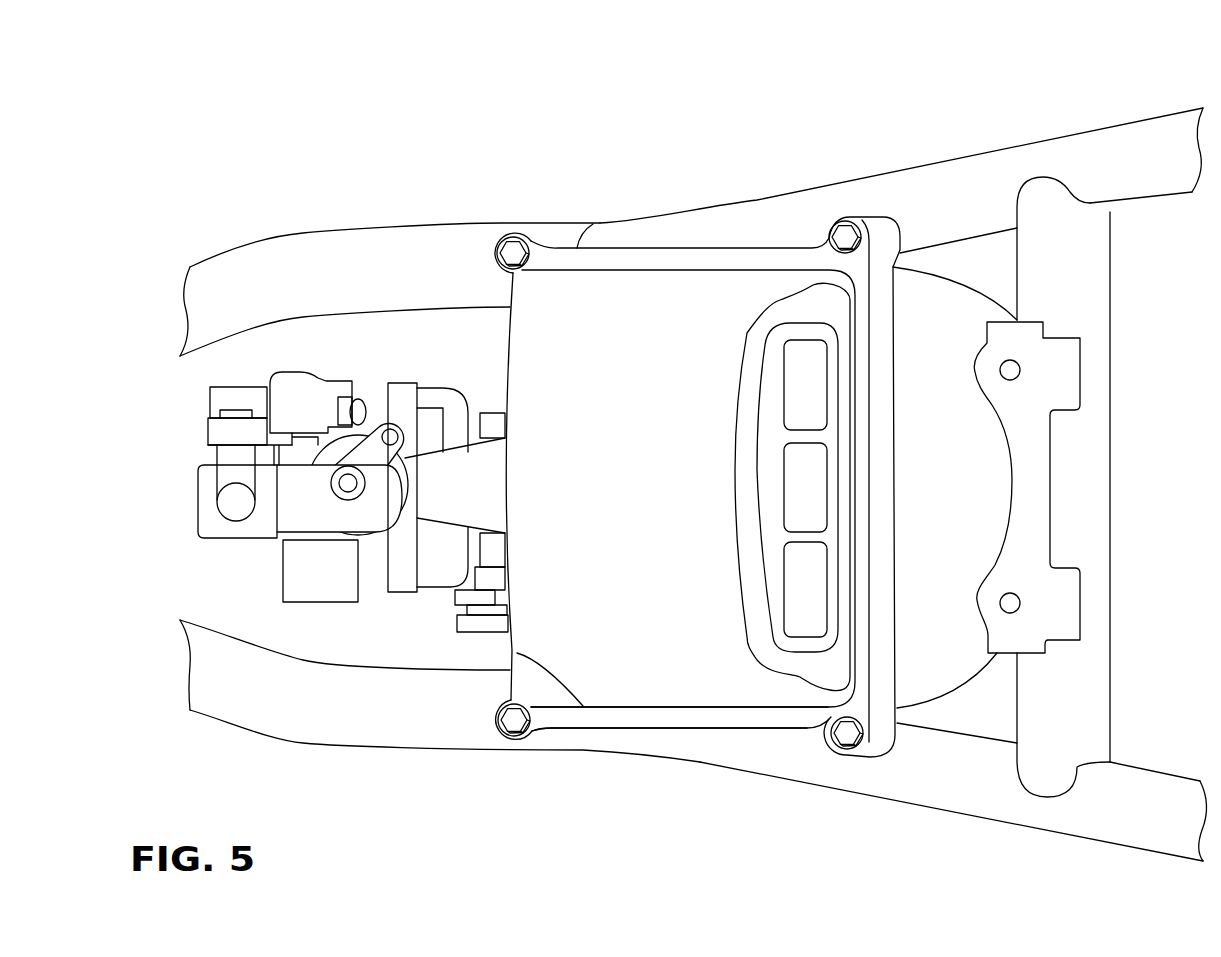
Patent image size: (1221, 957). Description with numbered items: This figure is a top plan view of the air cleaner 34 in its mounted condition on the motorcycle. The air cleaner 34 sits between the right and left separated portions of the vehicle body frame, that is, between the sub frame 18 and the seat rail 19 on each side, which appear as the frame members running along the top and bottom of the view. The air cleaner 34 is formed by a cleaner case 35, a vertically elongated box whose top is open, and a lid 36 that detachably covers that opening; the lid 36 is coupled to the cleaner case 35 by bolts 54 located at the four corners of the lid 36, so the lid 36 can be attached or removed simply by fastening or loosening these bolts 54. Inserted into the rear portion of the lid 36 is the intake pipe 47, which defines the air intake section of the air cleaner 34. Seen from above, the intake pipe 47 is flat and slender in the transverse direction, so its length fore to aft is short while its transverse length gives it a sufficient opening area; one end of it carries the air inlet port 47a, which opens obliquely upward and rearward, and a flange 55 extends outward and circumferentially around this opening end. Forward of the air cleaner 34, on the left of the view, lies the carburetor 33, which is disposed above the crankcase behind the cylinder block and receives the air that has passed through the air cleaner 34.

The sub frame 18 is at (308, 232).
The seat rail 19 is at (900, 168).
The carburetor 33 is at (283, 577).
The air cleaner 34 is at (675, 728).
The cleaner case 35 is at (947, 473).
The lid 36 is at (641, 305).
The intake pipe 47 is at (735, 422).
The air inlet port 47a is at (820, 500).
The bolt 54 is at (503, 250).
The flange 55 is at (743, 522).